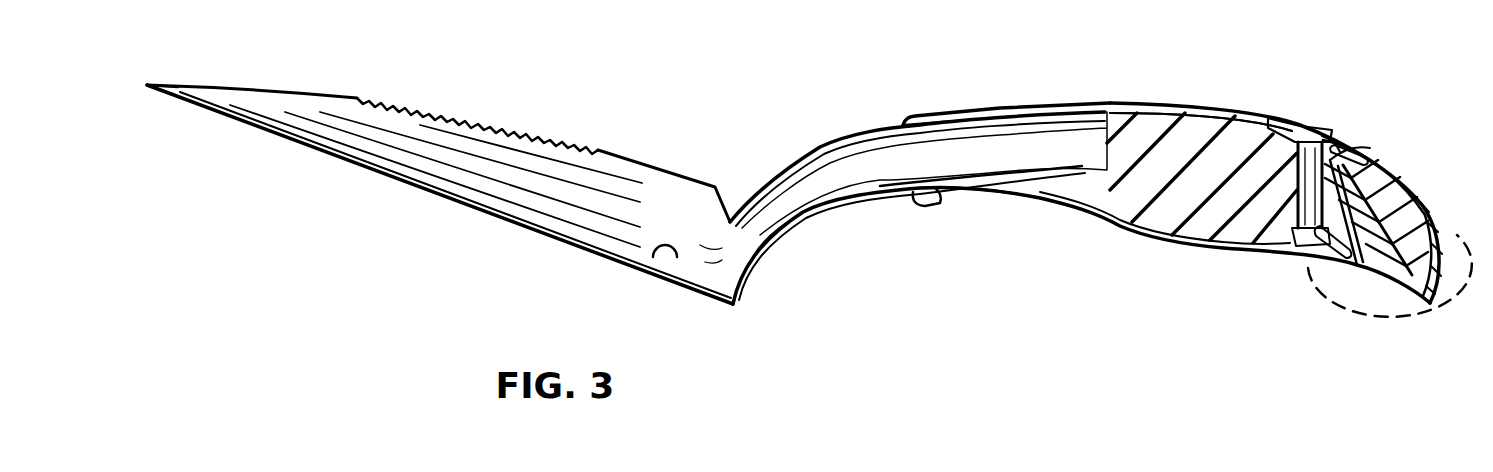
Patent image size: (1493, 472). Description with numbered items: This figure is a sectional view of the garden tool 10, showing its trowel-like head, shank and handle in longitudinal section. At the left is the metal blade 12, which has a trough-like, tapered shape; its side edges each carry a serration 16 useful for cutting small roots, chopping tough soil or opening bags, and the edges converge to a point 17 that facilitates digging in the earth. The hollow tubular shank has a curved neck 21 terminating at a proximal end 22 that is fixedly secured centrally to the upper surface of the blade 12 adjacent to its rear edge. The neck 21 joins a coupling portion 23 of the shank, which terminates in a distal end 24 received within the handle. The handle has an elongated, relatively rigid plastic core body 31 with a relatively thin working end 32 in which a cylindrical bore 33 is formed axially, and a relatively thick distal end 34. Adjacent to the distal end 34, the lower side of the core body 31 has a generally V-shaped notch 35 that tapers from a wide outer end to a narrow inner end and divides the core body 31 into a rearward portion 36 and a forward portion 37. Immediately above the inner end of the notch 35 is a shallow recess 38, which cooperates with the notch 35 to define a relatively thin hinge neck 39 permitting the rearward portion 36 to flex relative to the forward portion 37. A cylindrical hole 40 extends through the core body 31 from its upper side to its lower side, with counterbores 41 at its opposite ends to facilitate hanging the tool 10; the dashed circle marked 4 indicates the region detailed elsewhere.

The garden tool 10 is at (742, 101).
The blade 12 is at (420, 170).
The serration 16 is at (468, 122).
The point 17 is at (150, 84).
The neck 21 is at (775, 243).
The proximal end 22 is at (662, 270).
The coupling portion 23 is at (1020, 193).
The distal end 24 is at (1148, 107).
The core body 31 is at (1157, 218).
The working end 32 is at (925, 206).
The cylindrical bore 33 is at (1080, 194).
The distal end 34 is at (1340, 229).
The notch 35 is at (1394, 210).
The rearward portion 36 is at (1385, 178).
The forward portion 37 is at (1205, 122).
The shallow recess 38 is at (1362, 158).
The hinge neck 39 is at (1332, 138).
The cylindrical hole 40 is at (1306, 126).
The counterbores 41 is at (1300, 249).
The detail area of FIG. 4 is at (1458, 305).